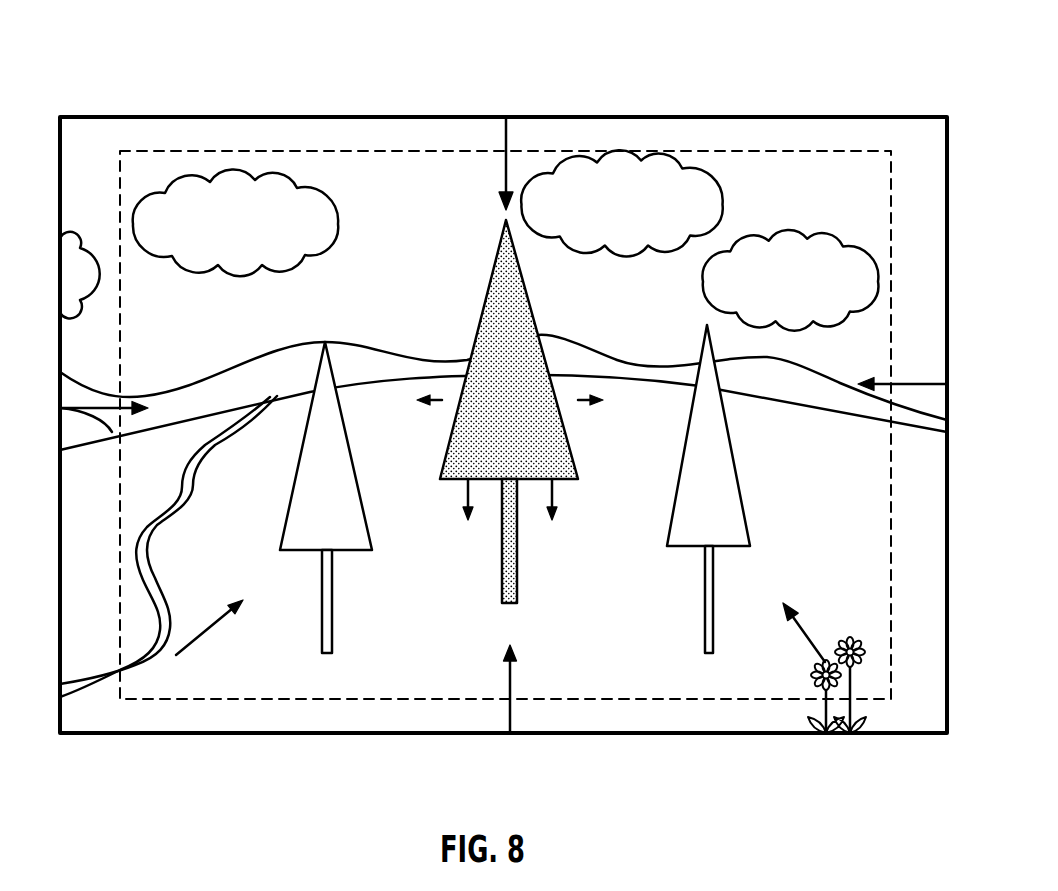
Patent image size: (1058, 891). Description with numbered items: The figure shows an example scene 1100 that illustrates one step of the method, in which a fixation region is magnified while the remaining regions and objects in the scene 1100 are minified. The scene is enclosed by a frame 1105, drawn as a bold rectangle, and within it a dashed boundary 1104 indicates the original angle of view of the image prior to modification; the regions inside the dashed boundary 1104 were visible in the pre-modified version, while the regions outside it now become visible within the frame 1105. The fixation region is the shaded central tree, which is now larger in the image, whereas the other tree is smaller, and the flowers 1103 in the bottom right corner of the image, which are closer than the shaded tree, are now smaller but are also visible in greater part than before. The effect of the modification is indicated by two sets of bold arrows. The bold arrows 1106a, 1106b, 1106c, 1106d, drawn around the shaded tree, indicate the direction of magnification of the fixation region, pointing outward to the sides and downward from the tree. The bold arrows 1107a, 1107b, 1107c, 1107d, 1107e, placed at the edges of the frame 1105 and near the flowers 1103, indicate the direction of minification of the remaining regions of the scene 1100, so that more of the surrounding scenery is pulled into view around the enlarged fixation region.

The scene 1100 is at (497, 398).
The flowers 1103 is at (790, 690).
The dashed boundary 1104 is at (210, 700).
The frame 1105 is at (130, 117).
The bold arrow 1106a is at (467, 493).
The bold arrow 1106b is at (557, 493).
The bold arrow 1106c is at (578, 403).
The bold arrow 1106d is at (440, 403).
The bold arrow 1107a is at (523, 672).
The bold arrow 1107b is at (800, 613).
The bold arrow 1107c is at (875, 381).
The bold arrow 1107d is at (503, 178).
The bold arrow 1107e is at (168, 369).